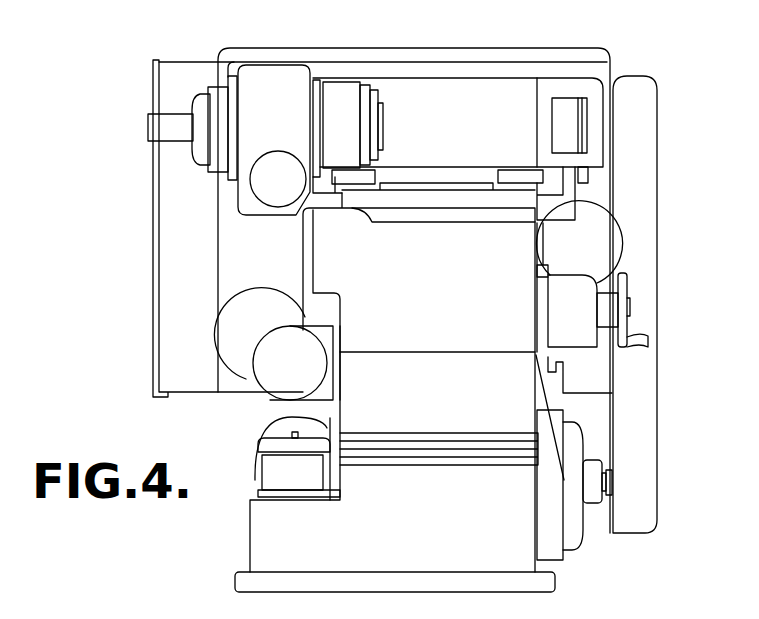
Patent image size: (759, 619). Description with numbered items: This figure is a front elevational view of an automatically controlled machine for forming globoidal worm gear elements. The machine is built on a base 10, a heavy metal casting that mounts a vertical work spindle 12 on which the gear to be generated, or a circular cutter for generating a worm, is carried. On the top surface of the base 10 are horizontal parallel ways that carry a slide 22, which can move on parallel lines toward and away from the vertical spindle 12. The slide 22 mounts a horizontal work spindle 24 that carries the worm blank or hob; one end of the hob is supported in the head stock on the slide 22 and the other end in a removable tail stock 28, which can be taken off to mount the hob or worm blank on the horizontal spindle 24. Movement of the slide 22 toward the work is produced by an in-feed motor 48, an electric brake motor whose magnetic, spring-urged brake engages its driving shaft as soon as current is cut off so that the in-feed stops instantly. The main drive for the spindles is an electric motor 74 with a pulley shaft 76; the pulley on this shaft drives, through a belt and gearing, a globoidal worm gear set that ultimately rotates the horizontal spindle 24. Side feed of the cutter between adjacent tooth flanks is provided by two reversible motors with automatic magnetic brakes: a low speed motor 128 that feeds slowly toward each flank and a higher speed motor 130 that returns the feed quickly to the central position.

The base 10 is at (425, 400).
The vertical work spindle 12 is at (432, 184).
The slide 22 is at (527, 77).
The horizontal work spindle 24 is at (383, 100).
The removable tail stock 28 is at (577, 100).
The in-feed motor 48 is at (615, 235).
The electric motor 74 is at (575, 538).
The pulley shaft 76 is at (608, 487).
The low speed motor 128 is at (262, 373).
The higher speed motor 130 is at (255, 472).